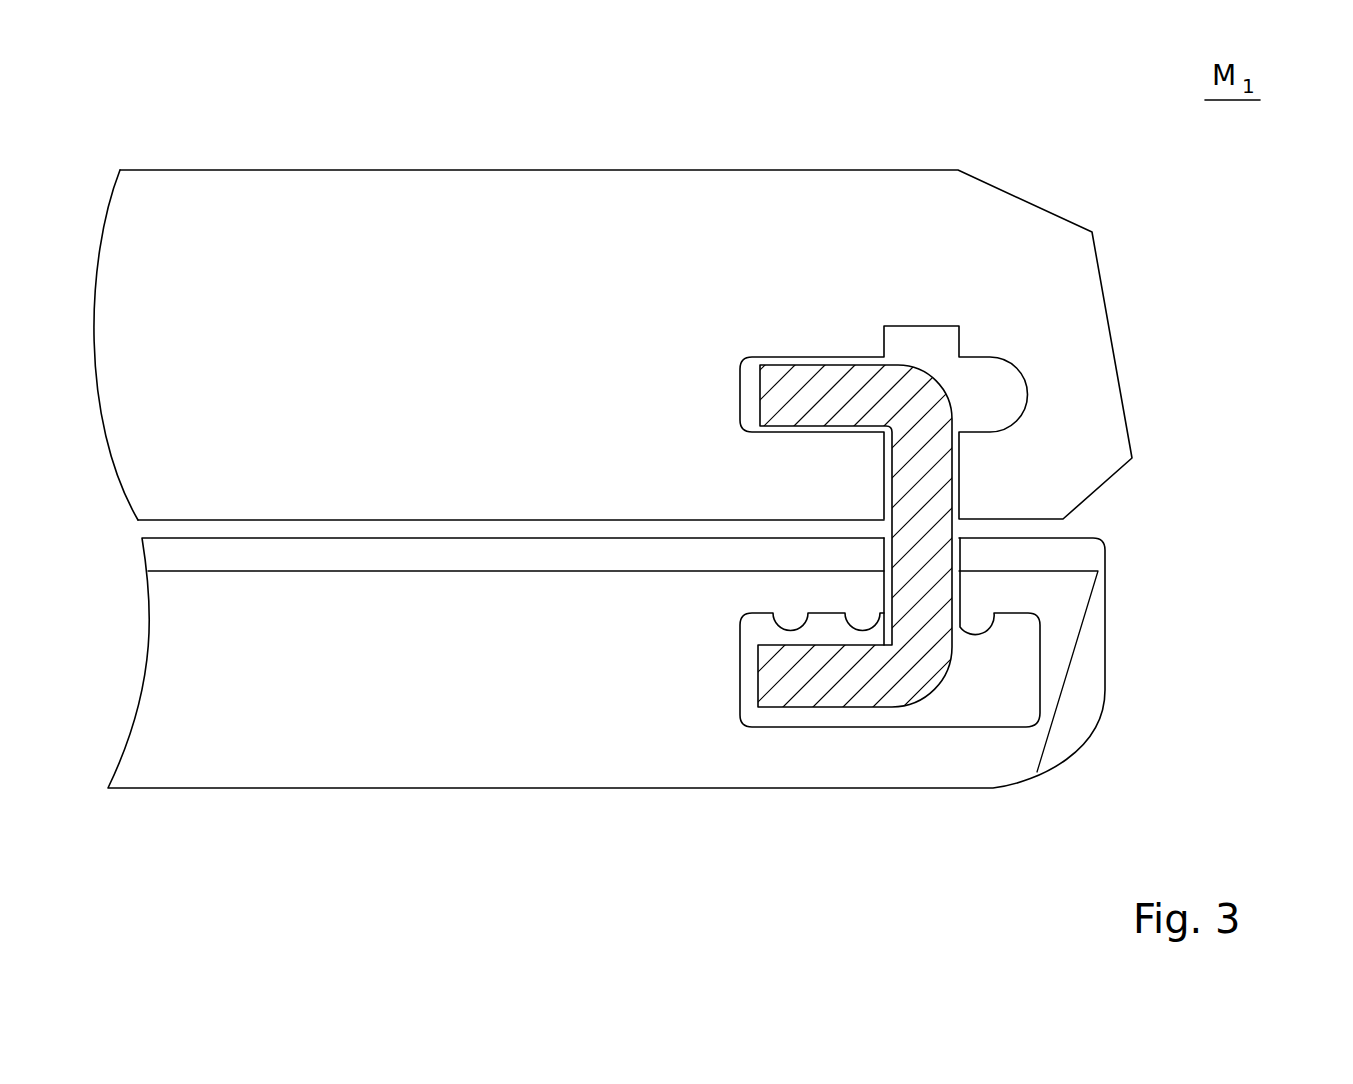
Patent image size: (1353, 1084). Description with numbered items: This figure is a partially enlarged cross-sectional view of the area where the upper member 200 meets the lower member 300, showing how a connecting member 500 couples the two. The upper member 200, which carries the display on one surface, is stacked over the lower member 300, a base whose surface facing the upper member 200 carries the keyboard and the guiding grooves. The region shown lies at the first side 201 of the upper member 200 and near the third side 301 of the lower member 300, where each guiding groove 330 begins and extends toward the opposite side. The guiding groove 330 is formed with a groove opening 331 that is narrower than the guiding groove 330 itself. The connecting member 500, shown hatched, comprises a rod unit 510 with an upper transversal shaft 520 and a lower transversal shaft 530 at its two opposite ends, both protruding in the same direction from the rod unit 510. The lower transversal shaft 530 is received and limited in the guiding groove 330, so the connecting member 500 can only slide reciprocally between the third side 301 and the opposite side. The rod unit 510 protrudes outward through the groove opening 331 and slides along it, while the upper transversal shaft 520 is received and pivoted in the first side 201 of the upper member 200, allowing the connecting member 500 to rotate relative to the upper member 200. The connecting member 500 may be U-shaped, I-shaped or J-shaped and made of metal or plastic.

The upper member 200 is at (731, 160).
The first side 201 is at (340, 485).
The lower member 300 is at (875, 802).
The third side 301 is at (456, 600).
The guiding groove 330 is at (982, 733).
The groove opening 331 is at (888, 553).
The connecting member 500 is at (855, 522).
The rod unit 510 is at (930, 483).
The upper transversal shaft 520 is at (815, 380).
The lower transversal shaft 530 is at (1232, 285).